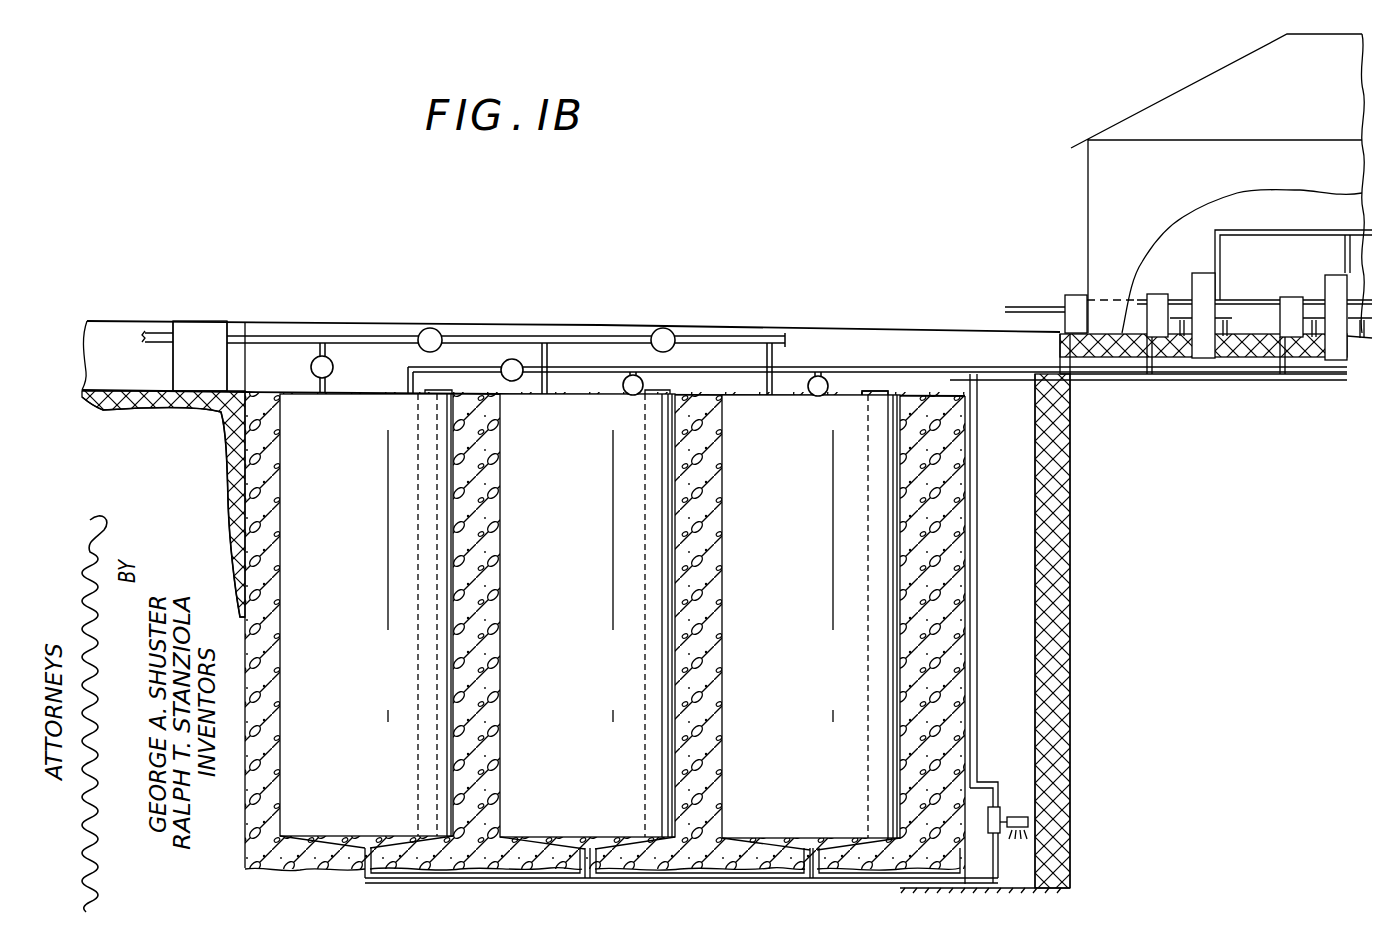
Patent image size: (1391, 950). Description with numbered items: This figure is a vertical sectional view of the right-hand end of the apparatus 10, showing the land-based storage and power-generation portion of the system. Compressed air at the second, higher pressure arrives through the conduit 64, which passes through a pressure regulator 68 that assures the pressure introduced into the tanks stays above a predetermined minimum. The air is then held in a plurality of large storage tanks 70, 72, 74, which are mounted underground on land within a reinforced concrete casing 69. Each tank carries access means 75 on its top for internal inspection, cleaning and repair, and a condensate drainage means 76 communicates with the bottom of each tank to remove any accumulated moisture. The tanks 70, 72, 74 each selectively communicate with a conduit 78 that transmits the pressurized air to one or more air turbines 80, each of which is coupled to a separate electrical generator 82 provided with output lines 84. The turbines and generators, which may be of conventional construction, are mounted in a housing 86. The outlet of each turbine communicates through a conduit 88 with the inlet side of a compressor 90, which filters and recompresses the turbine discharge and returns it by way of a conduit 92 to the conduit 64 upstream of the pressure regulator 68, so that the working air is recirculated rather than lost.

The storage system 10 is at (727, 287).
The conduit 64 is at (157, 334).
The pressure regulator 68 is at (205, 343).
The reinforced concrete casing 69 is at (938, 572).
The storage tank 70 is at (350, 620).
The storage tank 72 is at (562, 620).
The storage tank 74 is at (780, 618).
The access means 75 is at (883, 396).
The condensate drainage means 76 is at (1013, 816).
The conduit 78 is at (856, 350).
The air turbine 80 is at (1158, 297).
The electrical generator 82 is at (1200, 296).
The output lines 84 is at (1335, 231).
The housing 86 is at (1087, 204).
The conduit 88 is at (1274, 307).
The compressor 90 is at (1074, 295).
The conduit 92 is at (1038, 308).